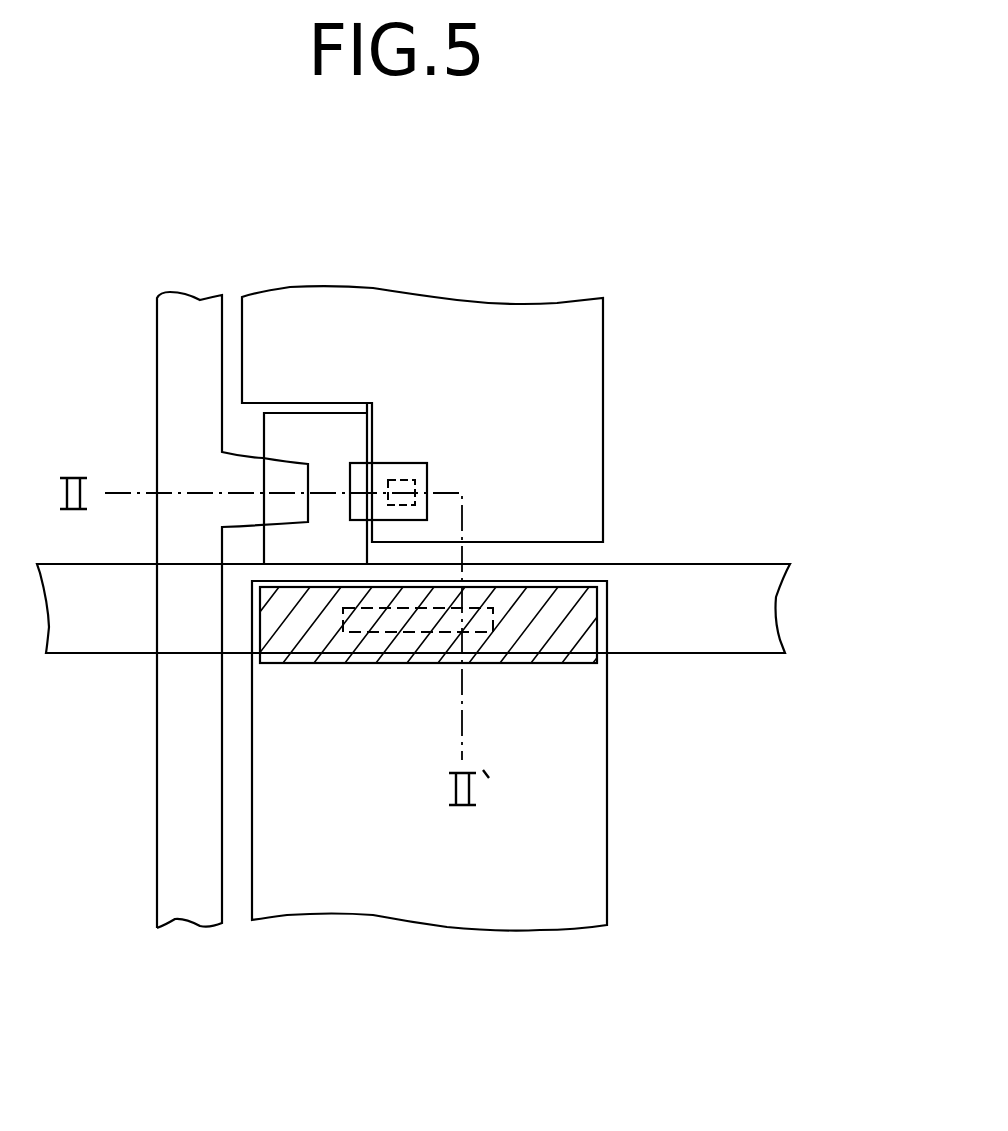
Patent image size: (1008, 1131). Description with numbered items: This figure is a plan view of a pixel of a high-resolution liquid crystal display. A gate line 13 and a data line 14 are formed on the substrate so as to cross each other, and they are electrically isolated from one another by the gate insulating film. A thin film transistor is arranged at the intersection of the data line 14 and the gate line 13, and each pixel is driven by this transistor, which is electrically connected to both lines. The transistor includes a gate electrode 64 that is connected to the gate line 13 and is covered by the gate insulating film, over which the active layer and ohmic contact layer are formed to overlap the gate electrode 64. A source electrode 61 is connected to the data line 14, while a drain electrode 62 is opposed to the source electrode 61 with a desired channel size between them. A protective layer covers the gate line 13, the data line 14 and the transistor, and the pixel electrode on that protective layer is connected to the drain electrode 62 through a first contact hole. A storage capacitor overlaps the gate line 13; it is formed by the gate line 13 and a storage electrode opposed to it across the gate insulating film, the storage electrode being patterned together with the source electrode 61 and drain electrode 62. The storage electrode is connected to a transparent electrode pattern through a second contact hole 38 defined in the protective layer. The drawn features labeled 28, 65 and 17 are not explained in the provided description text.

The data line 14 is at (183, 315).
The gate line 13 is at (752, 617).
The source electrode 61 is at (243, 455).
The gate electrode 64 is at (369, 403).
The drain electrode 62 is at (427, 463).
The contact hole 28 is at (405, 497).
The lower electrode 65 is at (582, 845).
The semiconductor layer 17 is at (318, 645).
The second contact hole 38 is at (433, 632).